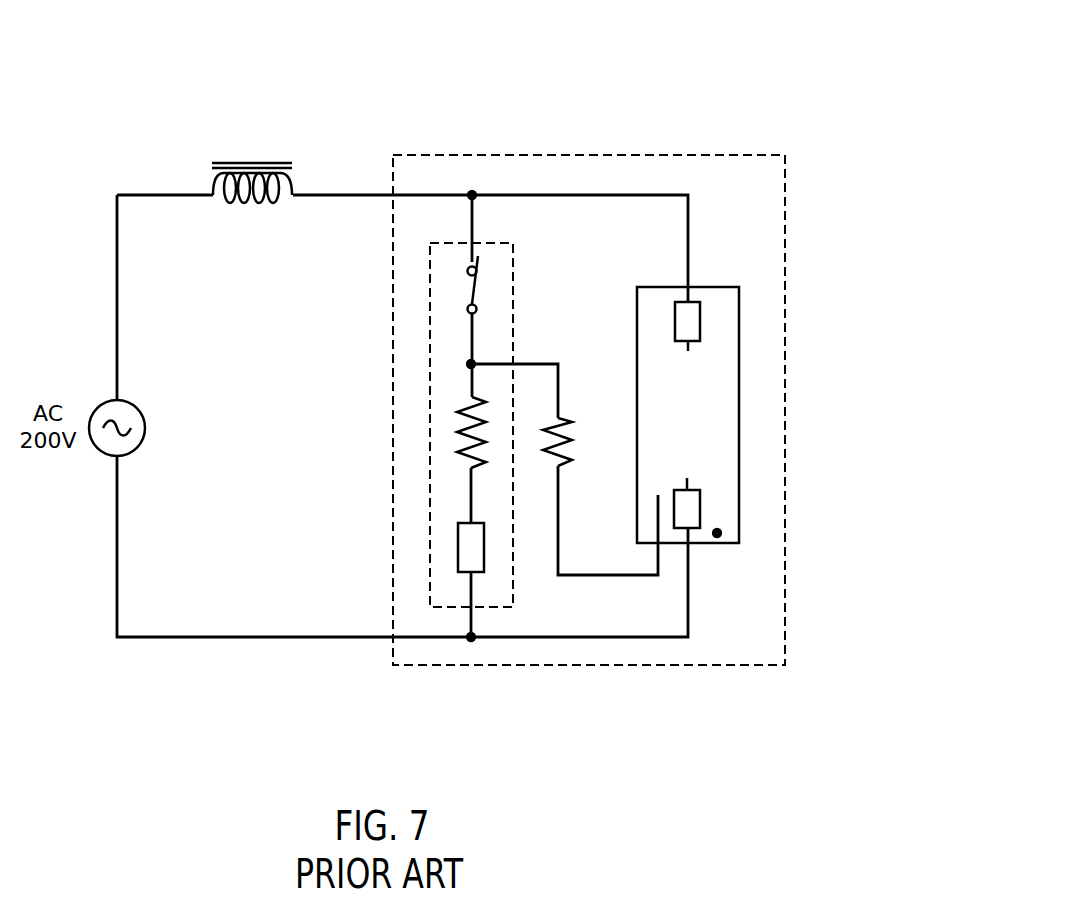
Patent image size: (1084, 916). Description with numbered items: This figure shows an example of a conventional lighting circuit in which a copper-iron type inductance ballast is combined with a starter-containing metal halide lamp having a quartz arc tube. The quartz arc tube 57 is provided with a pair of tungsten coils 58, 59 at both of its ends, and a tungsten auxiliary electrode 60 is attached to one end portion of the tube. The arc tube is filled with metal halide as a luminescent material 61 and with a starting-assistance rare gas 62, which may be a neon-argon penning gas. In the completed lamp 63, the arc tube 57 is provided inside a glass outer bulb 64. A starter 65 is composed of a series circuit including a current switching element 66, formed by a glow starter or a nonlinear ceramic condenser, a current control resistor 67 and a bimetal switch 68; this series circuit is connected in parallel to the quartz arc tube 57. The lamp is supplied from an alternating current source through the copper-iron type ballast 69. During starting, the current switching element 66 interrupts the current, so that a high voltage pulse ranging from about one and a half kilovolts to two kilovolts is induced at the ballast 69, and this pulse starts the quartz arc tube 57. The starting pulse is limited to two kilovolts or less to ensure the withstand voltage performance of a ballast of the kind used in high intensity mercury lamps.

The quartz arc tube 57 is at (740, 368).
The tungsten coil 58 is at (687, 512).
The tungsten coil 59 is at (692, 318).
The tungsten auxiliary electrode 60 is at (659, 510).
The luminescent material 61 is at (721, 533).
The starting-assistance rare gas 62 is at (703, 415).
The completed lamp 63 is at (559, 125).
The glass outer bulb 64 is at (718, 155).
The starter 65 is at (430, 339).
The current switching element 66 is at (468, 553).
The current control resistor 67 is at (463, 420).
The bimetal switch 68 is at (471, 290).
The copper-iron type ballast 69 is at (253, 162).